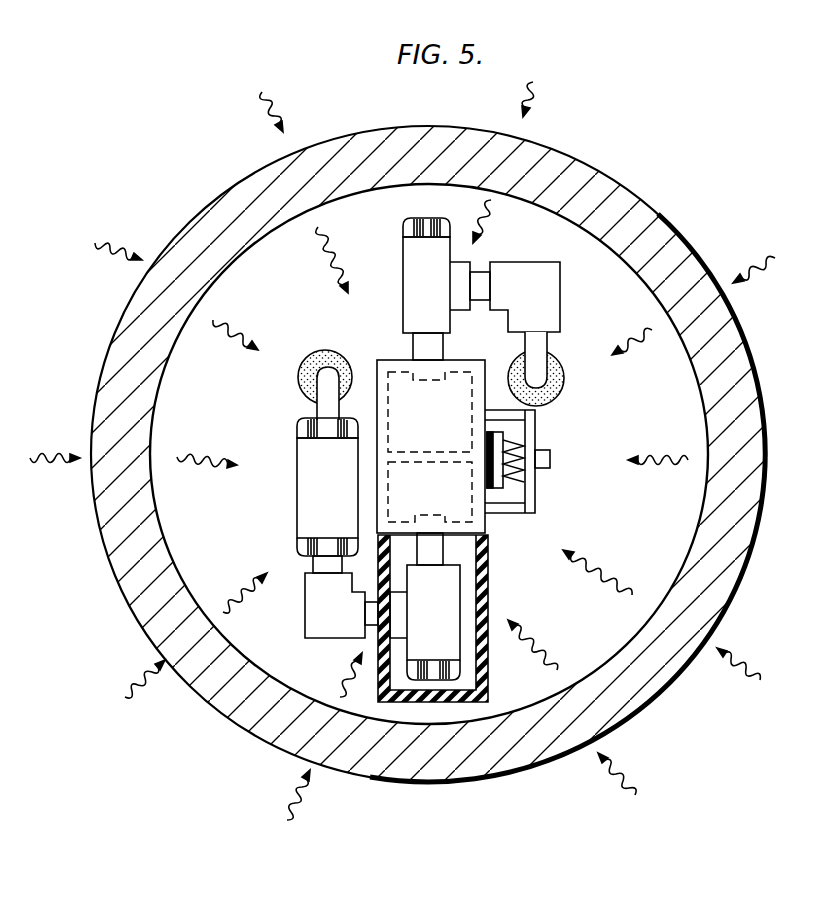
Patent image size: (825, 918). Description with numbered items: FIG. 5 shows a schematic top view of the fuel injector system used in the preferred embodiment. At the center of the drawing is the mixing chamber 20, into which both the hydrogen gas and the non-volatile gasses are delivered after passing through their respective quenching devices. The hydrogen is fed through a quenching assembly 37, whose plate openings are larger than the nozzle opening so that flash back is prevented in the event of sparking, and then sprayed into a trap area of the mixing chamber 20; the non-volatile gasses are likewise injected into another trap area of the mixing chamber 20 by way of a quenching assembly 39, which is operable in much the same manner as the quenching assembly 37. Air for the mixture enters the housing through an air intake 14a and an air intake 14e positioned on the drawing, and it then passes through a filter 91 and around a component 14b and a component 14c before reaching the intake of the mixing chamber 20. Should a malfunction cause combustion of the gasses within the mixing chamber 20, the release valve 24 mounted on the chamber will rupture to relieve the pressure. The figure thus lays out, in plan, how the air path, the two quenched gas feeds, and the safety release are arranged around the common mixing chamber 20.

The filter 91 is at (645, 210).
The quenching assembly 39 is at (532, 275).
The mixing chamber 20 is at (480, 523).
The release valve 24 is at (530, 505).
The quenching assembly 37 is at (447, 612).
The air intake 14a is at (757, 275).
The component 14b is at (657, 458).
The component 14c is at (212, 460).
The air intake 14e is at (58, 462).